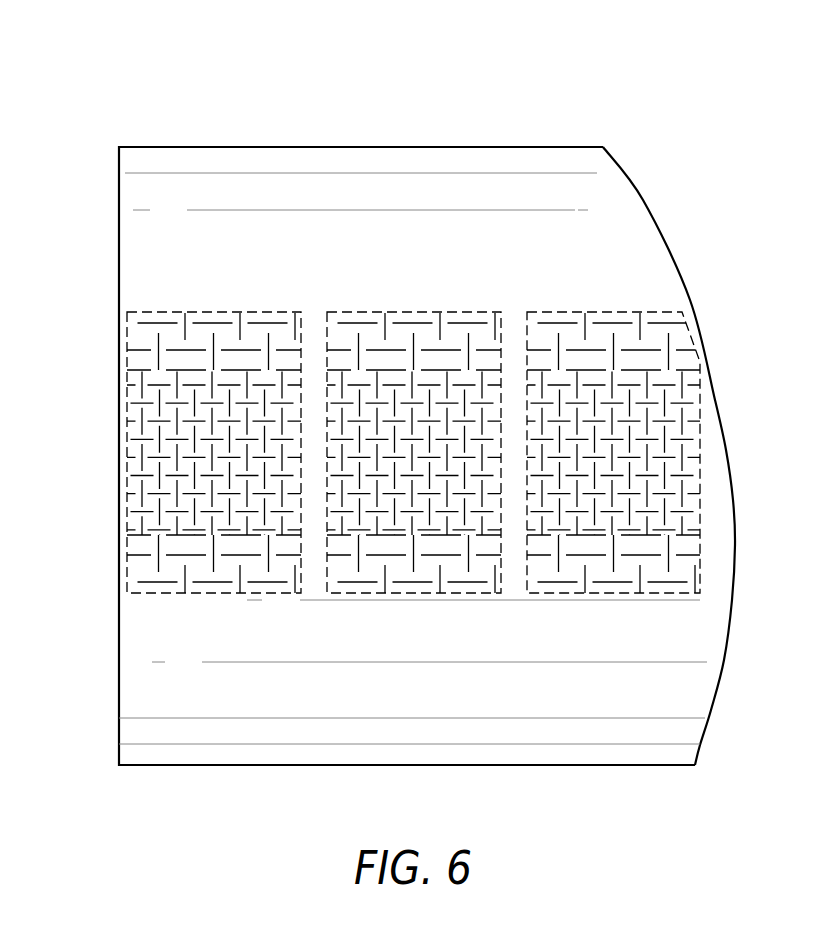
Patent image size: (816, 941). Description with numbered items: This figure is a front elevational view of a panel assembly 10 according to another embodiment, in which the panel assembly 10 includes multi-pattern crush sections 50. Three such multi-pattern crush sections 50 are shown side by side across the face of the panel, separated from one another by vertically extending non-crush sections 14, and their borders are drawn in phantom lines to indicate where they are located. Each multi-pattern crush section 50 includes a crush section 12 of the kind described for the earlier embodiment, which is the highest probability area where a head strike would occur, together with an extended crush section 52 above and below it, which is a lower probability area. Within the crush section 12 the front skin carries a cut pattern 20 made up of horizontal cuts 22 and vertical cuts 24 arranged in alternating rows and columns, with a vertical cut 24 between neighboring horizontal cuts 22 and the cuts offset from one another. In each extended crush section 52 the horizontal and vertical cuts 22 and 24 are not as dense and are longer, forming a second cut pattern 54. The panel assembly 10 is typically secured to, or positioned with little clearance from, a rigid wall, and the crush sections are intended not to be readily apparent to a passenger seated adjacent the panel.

The panel assembly 10 is at (679, 145).
The crush section 12 is at (127, 432).
The non-crush section 14 is at (313, 328).
The cut pattern 20 is at (136, 454).
The horizontal cut 22 is at (350, 583).
The vertical cut 24 is at (383, 583).
The multi-pattern crush section 50 is at (213, 291).
The extended crush section 52 is at (127, 320).
The second cut pattern 54 is at (136, 342).